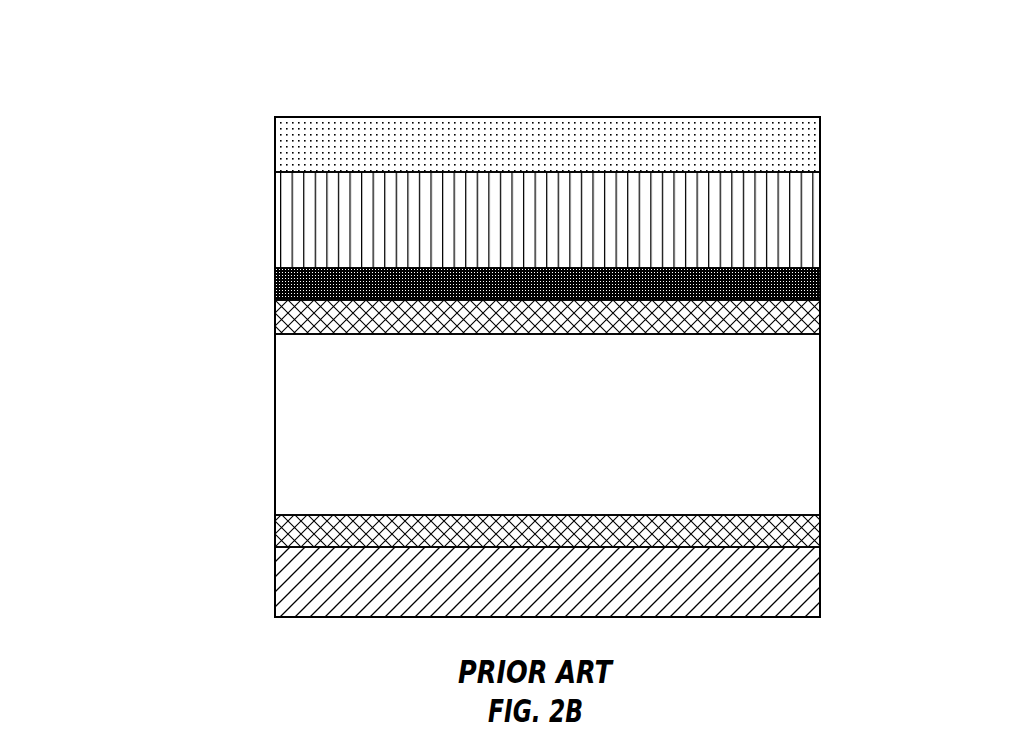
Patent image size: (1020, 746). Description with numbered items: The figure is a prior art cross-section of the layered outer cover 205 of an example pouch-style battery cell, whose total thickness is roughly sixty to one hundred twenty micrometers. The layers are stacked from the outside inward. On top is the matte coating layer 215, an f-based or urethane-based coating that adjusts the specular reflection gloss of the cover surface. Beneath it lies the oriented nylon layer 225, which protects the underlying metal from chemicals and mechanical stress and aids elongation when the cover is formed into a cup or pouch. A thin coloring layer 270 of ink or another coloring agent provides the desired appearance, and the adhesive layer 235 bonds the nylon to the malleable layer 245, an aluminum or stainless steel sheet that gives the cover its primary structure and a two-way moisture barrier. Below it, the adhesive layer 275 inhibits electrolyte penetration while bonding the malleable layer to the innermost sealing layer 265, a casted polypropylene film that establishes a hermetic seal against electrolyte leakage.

The outer cover 205 is at (847, 112).
The matte coating layer 215 is at (638, 156).
The oriented nylon layer 225 is at (640, 234).
The coloring layer 270 is at (275, 288).
The adhesive layer 235 is at (275, 321).
The malleable layer 245 is at (622, 440).
The adhesive layer 275 is at (275, 535).
The sealing layer 265 is at (612, 596).